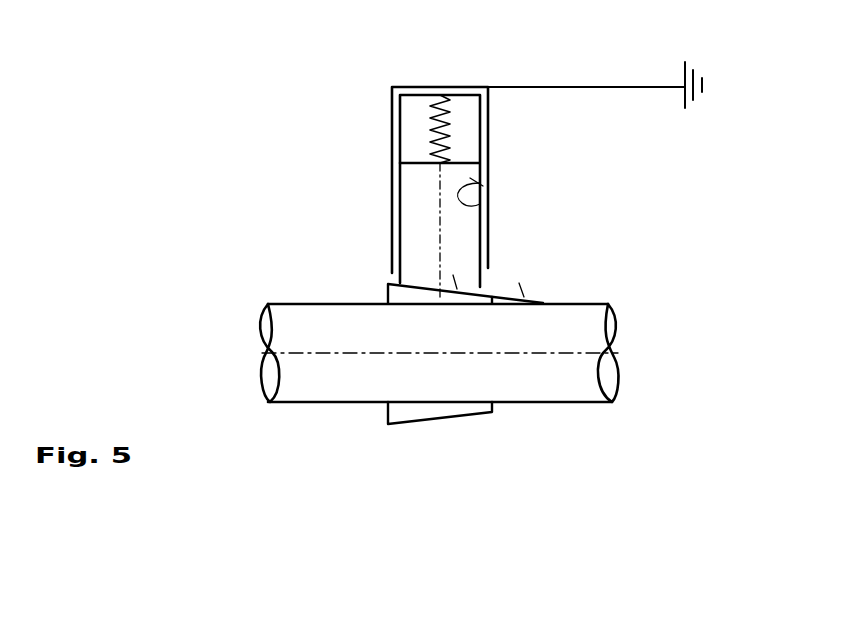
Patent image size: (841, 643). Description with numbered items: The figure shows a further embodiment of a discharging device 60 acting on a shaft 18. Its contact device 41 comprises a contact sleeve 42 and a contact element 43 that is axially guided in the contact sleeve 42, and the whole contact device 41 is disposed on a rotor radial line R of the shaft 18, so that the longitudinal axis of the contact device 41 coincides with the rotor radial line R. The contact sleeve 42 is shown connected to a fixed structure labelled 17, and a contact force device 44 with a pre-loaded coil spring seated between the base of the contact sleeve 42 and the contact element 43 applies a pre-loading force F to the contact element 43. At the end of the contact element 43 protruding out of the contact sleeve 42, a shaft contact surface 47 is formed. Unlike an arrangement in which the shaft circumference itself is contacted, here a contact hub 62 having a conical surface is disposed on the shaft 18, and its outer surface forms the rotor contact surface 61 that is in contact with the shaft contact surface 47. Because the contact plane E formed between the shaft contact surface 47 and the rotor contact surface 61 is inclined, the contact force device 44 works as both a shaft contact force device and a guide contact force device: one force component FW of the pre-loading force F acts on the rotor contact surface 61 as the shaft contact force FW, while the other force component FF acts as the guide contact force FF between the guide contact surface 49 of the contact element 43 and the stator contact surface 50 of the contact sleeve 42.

The ground / fixed frame 17 is at (718, 70).
The shaft 18 is at (580, 330).
The contact device 41 is at (342, 142).
The contact sleeve 42 is at (487, 128).
The contact element 43 is at (420, 217).
The contact force device 44 is at (416, 118).
The shaft contact surface 47 is at (422, 300).
The guide contact surface 49 is at (486, 170).
The stator contact surface 50 is at (487, 206).
The discharging device 60 is at (578, 68).
The rotor contact surface 61 is at (462, 290).
The contact hub 62 is at (422, 407).
The contact plane E is at (527, 297).
The pre-loading force F is at (440, 87).
The shaft contact force FW is at (441, 285).
The guide contact force FF is at (488, 215).
The rotor radial line R is at (442, 73).